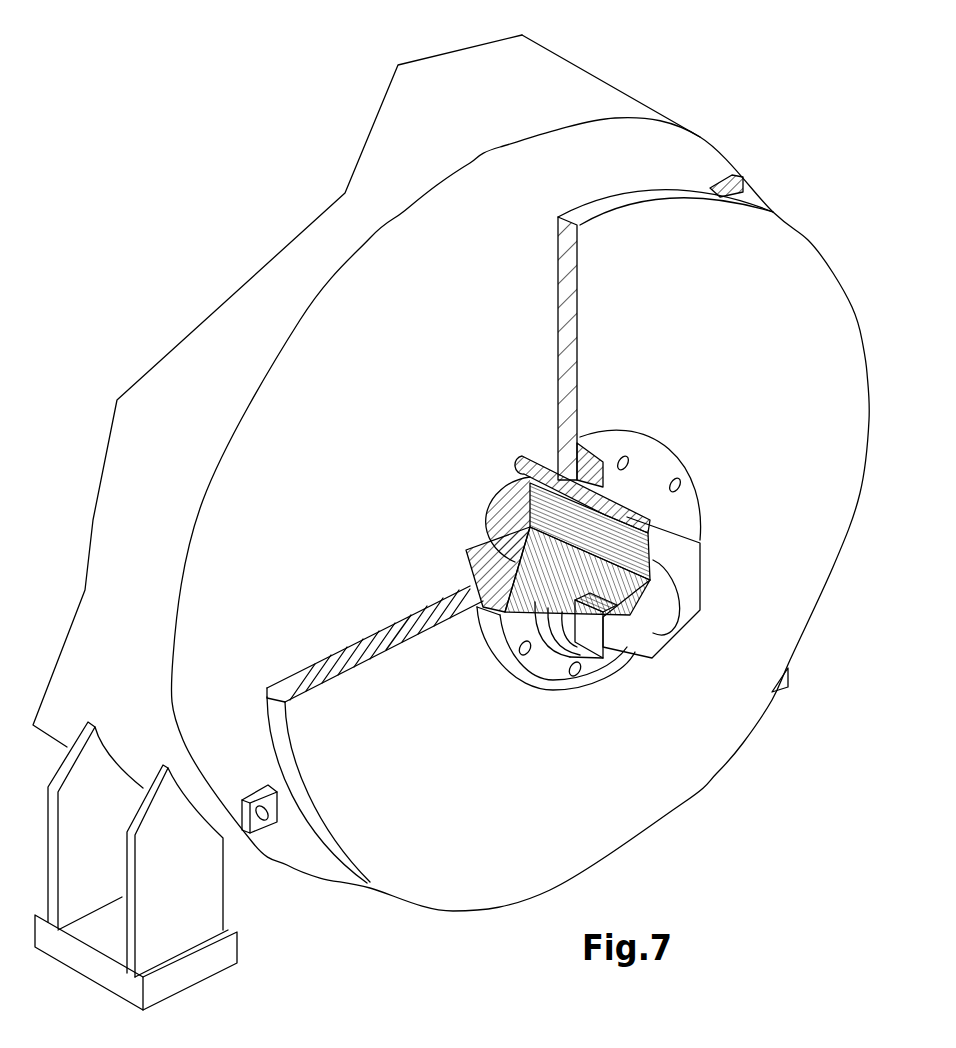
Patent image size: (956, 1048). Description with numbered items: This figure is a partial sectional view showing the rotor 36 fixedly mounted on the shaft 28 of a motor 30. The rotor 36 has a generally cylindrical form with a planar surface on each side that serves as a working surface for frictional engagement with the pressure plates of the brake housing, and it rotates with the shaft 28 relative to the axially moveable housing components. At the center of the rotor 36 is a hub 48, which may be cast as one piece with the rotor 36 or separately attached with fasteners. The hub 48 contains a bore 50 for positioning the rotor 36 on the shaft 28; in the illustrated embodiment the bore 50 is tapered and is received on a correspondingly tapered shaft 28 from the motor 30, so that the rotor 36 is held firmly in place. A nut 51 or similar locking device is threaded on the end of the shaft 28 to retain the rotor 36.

The motor 30 is at (587, 65).
The rotor 36 is at (803, 230).
The hub 48 is at (695, 480).
The shaft 28 is at (653, 573).
The bore 50 is at (478, 545).
The nut 51 is at (673, 638).